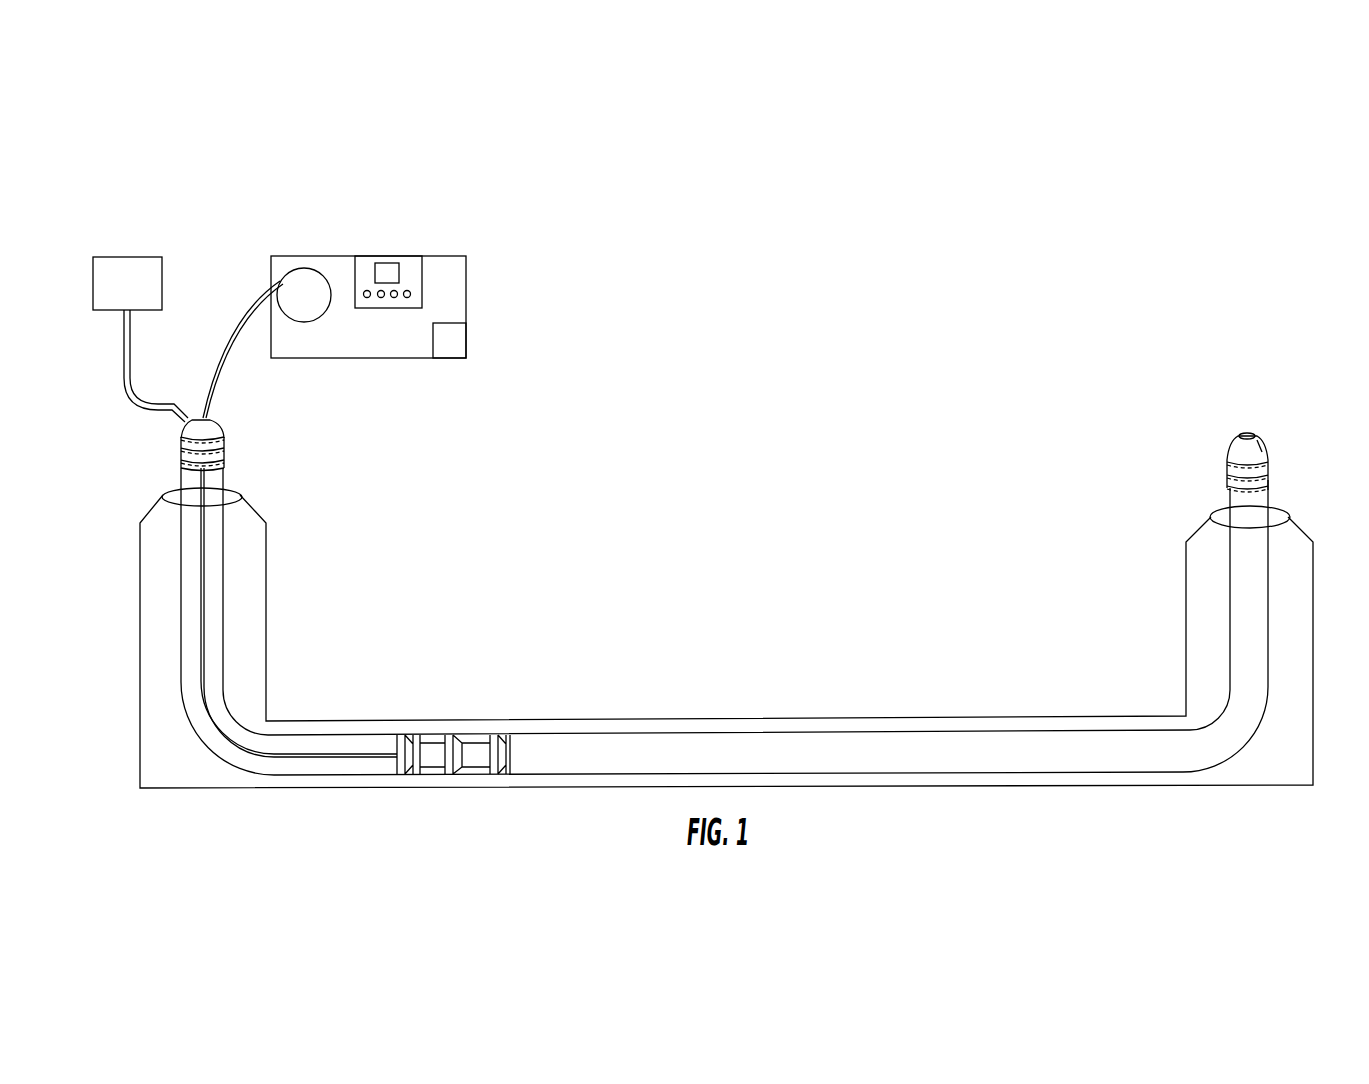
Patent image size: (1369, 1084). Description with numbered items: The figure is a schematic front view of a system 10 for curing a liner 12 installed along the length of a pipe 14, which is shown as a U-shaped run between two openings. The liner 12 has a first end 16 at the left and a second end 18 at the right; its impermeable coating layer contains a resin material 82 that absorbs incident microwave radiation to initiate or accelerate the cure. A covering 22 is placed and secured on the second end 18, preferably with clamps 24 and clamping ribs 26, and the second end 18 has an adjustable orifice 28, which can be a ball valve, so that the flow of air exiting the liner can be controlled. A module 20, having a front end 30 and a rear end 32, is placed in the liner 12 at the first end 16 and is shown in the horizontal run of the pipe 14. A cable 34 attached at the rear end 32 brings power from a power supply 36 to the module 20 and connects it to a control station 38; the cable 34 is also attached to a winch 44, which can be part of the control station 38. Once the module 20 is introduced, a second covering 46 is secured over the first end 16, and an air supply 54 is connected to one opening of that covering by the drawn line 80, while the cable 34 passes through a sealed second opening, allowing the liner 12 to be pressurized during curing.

The system 10 is at (955, 387).
The liner 12 is at (1218, 716).
The pipe 14 is at (917, 733).
The first end 16 is at (170, 473).
The second end 18 is at (1277, 478).
The module 20 is at (423, 750).
The covering 22 is at (1268, 450).
The clamps 24 is at (1240, 490).
The clamping ribs 26 is at (1268, 488).
The adjustable orifice 28 is at (1248, 432).
The front end 30 is at (510, 737).
The rear end 32 is at (405, 753).
The cable 34 is at (212, 368).
The power supply 36 is at (463, 348).
The control station 38 is at (410, 265).
The winch 44 is at (297, 277).
The second covering 46 is at (210, 423).
The air supply 54 is at (140, 263).
The supply tube 80 is at (175, 410).
The resin material 82 is at (748, 733).